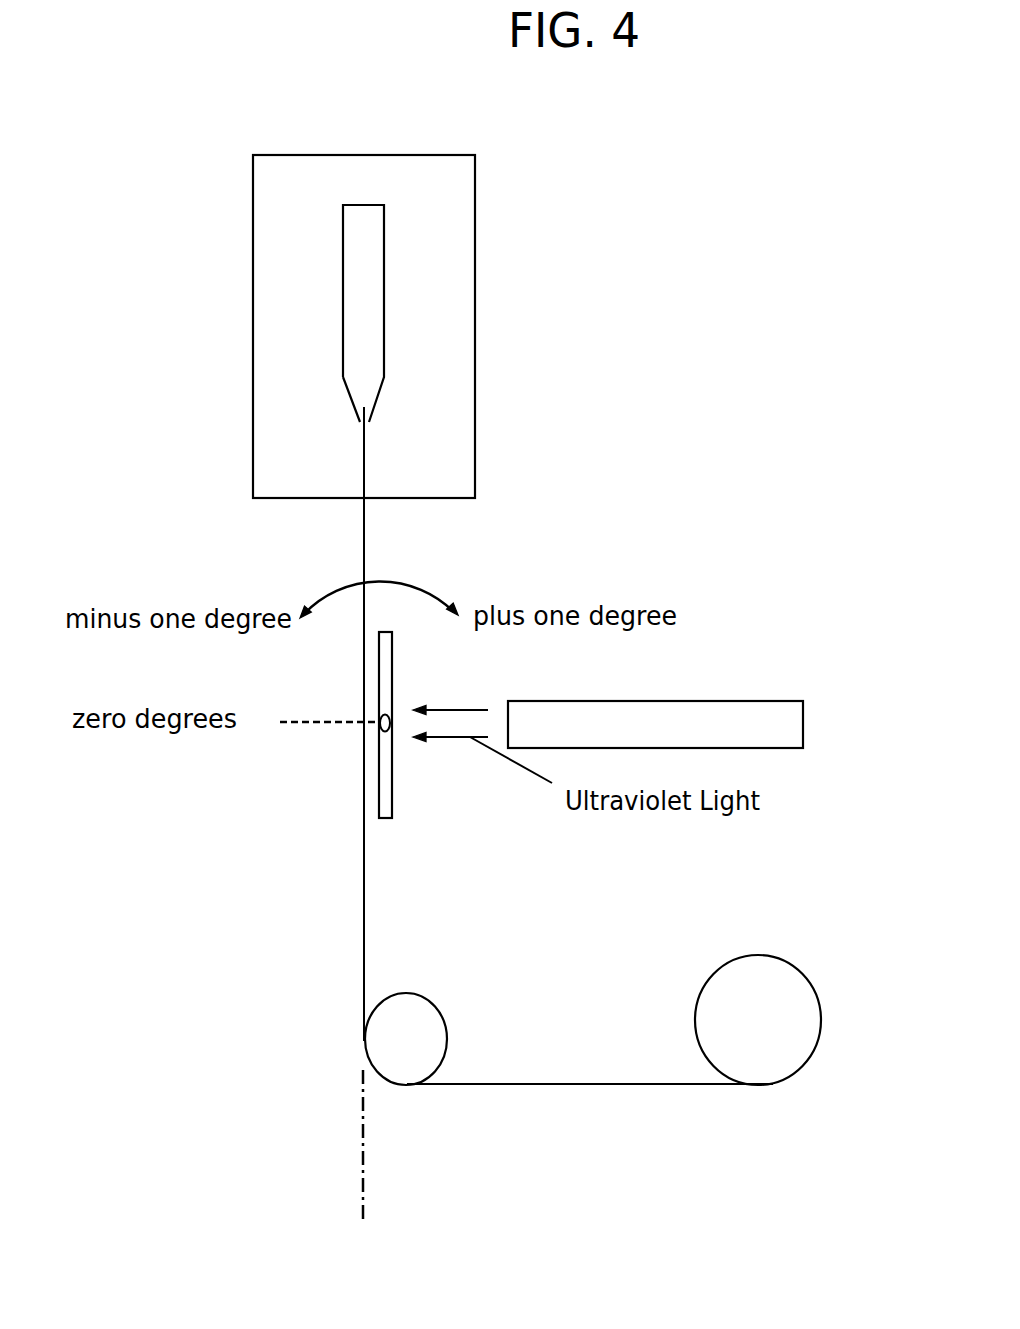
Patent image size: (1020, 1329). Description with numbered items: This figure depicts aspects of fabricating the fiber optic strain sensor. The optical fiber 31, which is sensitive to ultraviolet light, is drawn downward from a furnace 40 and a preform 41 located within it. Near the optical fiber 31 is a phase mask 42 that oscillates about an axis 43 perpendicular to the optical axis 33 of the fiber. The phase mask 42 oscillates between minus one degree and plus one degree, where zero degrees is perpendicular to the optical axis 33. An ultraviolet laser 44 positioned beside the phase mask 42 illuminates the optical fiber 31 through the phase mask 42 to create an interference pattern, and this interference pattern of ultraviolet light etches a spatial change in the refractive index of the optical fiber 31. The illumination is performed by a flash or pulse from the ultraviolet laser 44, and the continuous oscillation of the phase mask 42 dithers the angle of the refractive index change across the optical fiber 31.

The furnace 40 is at (475, 235).
The preform 41 is at (385, 343).
The optical fiber 31 is at (364, 567).
The phase mask 42 is at (393, 793).
The axis 43 is at (380, 733).
The ultraviolet laser 44 is at (730, 701).
The optical axis 33 is at (363, 1175).